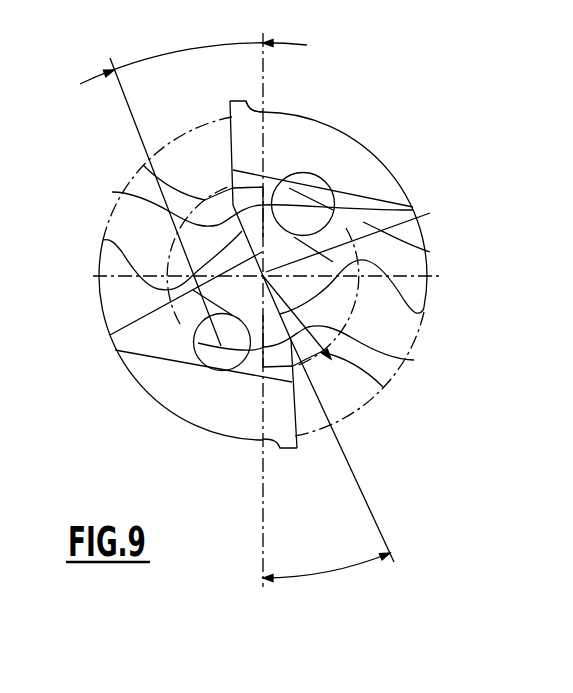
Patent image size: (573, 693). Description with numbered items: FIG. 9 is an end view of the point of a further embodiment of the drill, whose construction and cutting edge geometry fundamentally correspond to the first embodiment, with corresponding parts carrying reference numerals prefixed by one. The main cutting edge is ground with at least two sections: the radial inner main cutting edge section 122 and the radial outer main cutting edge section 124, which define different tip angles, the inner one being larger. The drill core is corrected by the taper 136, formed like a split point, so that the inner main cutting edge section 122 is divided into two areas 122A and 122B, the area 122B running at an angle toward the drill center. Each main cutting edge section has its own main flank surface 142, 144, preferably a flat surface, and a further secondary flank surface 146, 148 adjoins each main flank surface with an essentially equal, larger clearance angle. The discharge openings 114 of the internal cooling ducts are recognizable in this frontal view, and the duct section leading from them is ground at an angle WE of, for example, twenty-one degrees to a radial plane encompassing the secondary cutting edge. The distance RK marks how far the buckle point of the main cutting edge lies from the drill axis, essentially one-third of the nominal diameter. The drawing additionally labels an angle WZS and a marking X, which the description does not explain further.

The discharge opening 114 is at (227, 370).
The radial inner main cutting edge section 122 is at (118, 193).
The area of the inner main cutting edge section 122A is at (143, 165).
The area of the inner main cutting edge section 122B is at (197, 347).
The radial outer main cutting edge section 124 is at (231, 147).
The taper 136 is at (132, 292).
The main flank surface 142 is at (413, 210).
The main flank surface 144 is at (247, 143).
The secondary flank surface 146 is at (430, 252).
The secondary flank surface 148 is at (337, 175).
The grinding angle WE is at (264, 70).
The angle WZS is at (328, 566).
The reference circle X is at (360, 297).
The distance of the buckle point from the axis RK is at (375, 402).